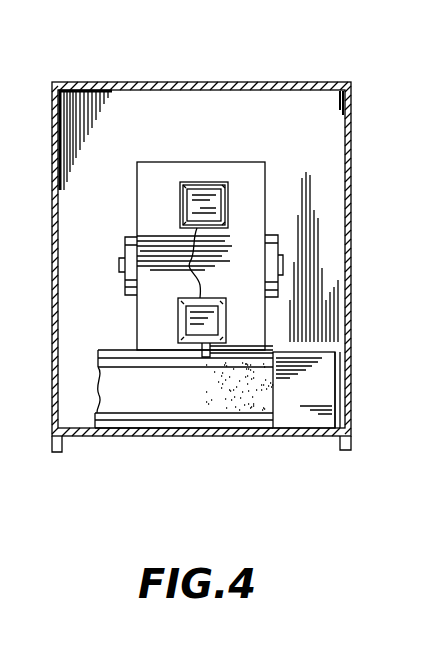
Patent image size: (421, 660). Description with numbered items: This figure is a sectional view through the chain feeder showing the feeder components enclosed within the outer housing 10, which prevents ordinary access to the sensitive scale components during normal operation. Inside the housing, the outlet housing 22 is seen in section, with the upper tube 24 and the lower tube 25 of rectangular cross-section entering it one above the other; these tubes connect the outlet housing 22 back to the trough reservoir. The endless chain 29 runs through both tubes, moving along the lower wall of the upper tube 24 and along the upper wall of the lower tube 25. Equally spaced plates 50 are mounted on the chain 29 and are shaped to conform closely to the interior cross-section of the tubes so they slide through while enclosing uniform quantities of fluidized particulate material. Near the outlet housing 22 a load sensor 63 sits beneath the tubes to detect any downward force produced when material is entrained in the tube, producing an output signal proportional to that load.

The outer housing 10 is at (263, 82).
The outlet housing 22 is at (235, 162).
The upper tube 24 is at (197, 182).
The lower tube 25 is at (215, 298).
The endless chain 29 is at (190, 268).
The plates 50 is at (228, 205).
The load sensor 63 is at (285, 408).